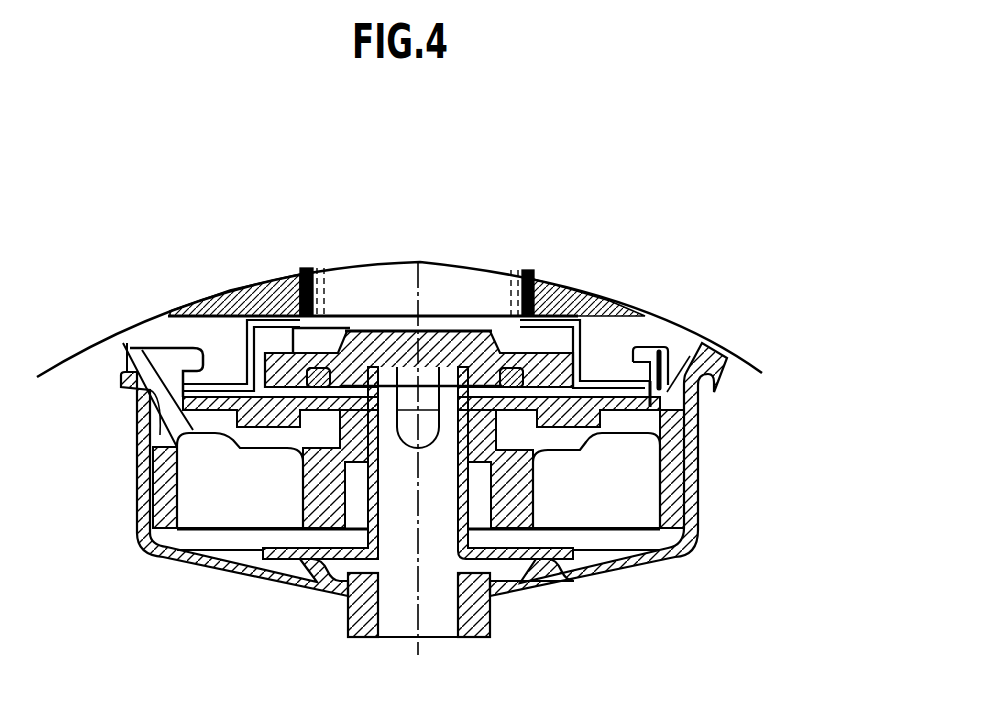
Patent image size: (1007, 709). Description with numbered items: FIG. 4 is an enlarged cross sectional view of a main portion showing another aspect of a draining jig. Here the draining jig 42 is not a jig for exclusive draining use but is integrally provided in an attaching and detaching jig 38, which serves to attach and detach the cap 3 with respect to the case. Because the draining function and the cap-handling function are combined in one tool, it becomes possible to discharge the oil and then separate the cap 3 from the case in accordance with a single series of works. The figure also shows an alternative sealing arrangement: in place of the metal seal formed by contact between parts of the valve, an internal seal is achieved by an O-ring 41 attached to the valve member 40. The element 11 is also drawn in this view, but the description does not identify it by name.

The cap 3 is at (712, 364).
The roof panel 11 is at (345, 265).
The attaching and detaching jig 38 is at (723, 533).
The valve member 40 is at (380, 330).
The O-ring 41 is at (508, 368).
The draining jig 42 is at (500, 503).